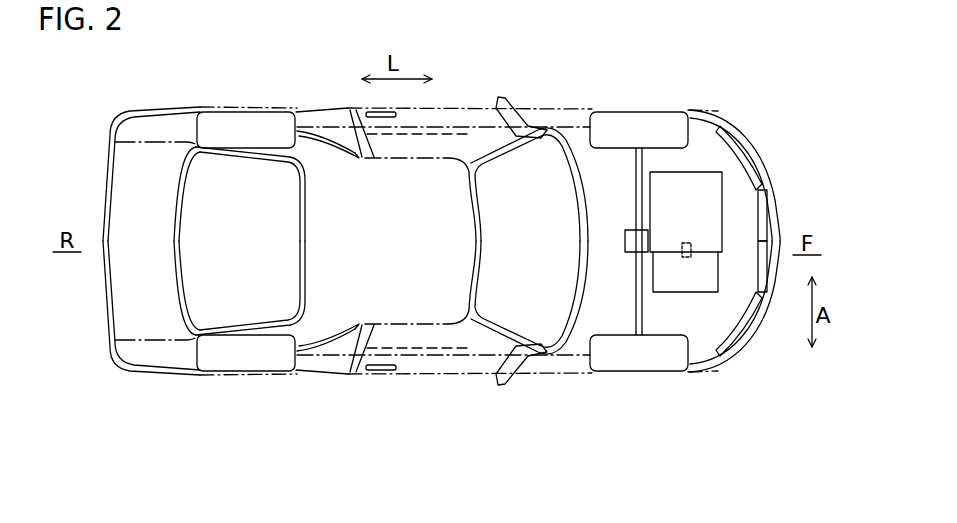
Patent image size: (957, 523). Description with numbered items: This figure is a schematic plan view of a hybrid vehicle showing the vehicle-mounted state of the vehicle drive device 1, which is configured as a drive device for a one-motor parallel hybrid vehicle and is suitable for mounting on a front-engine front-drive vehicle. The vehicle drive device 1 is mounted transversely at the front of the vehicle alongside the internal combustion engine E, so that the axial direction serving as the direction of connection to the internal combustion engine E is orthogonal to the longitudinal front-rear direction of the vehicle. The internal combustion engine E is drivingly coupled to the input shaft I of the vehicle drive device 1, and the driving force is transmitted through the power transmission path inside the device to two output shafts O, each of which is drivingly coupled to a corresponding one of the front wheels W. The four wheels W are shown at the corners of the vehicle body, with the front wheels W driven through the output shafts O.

The wheels W is at (242, 118).
The output shafts O is at (635, 200).
The vehicle drive device 1 is at (715, 197).
The internal combustion engine E is at (682, 290).
The input shaft I is at (691, 250).